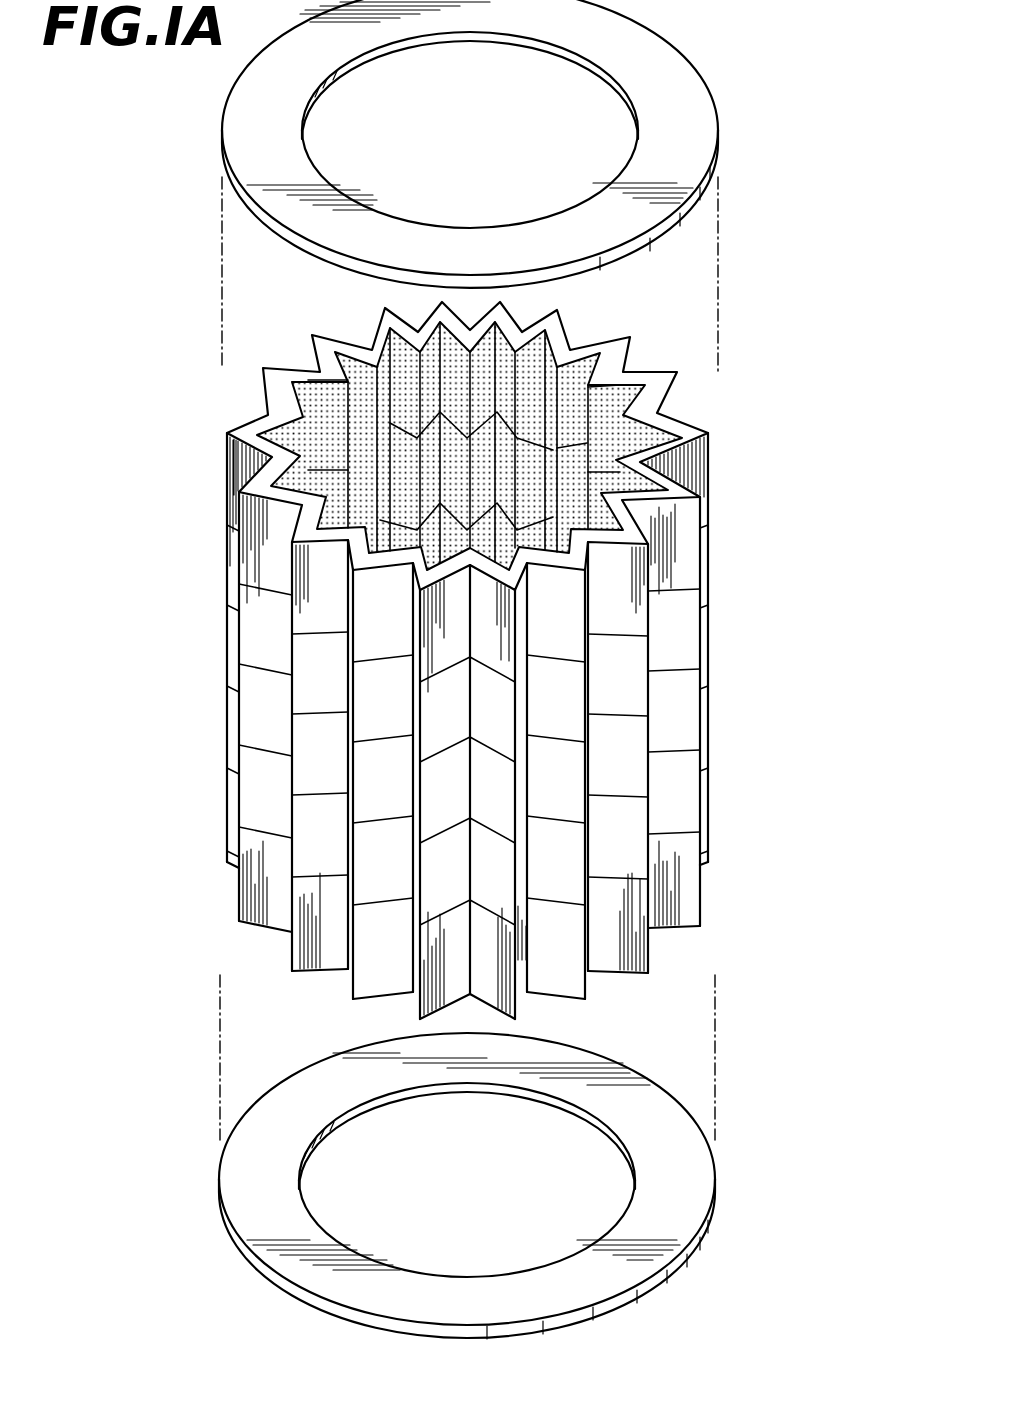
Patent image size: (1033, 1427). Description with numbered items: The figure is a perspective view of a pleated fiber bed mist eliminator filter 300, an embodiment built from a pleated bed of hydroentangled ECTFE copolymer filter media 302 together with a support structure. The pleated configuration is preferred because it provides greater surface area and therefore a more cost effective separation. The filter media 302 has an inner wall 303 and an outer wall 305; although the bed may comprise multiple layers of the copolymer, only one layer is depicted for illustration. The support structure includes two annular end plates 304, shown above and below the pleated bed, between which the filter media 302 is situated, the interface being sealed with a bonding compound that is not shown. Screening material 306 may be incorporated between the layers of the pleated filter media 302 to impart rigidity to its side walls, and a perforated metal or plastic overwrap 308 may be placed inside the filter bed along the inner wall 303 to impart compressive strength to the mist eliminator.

The pleated fiber bed mist eliminator filter 300 is at (853, 522).
The filter media 302 is at (680, 428).
The inner wall 303 is at (263, 435).
The annular end plates 304 is at (678, 75).
The outer wall 305 is at (255, 453).
The screening material 306 is at (572, 955).
The perforated metal or plastic overwrap 308 is at (325, 438).